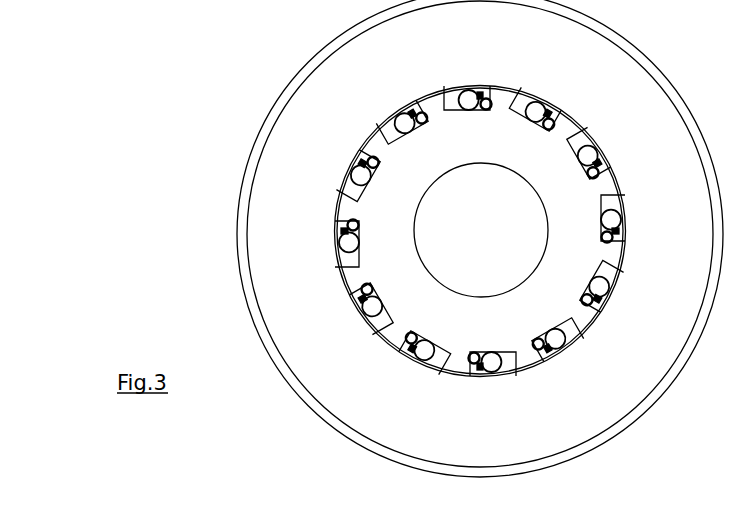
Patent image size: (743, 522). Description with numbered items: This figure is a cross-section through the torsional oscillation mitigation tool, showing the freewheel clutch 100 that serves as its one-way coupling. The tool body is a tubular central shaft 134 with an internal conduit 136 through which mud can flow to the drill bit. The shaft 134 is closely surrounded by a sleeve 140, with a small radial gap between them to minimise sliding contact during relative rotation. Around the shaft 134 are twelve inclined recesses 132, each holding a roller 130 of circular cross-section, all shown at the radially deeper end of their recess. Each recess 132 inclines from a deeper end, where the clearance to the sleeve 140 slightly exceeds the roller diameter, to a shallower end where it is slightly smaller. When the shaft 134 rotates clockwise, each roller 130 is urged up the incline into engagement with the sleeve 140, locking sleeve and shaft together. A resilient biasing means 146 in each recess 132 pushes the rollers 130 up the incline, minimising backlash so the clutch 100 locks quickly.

The freewheel clutch 100 is at (167, 203).
The rollers 130 is at (603, 285).
The inclined recess 132 is at (505, 350).
The central shaft 134 is at (387, 216).
The internal conduit 136 is at (501, 236).
The sleeve 140 is at (298, 302).
The resilient biasing means 146 is at (602, 157).